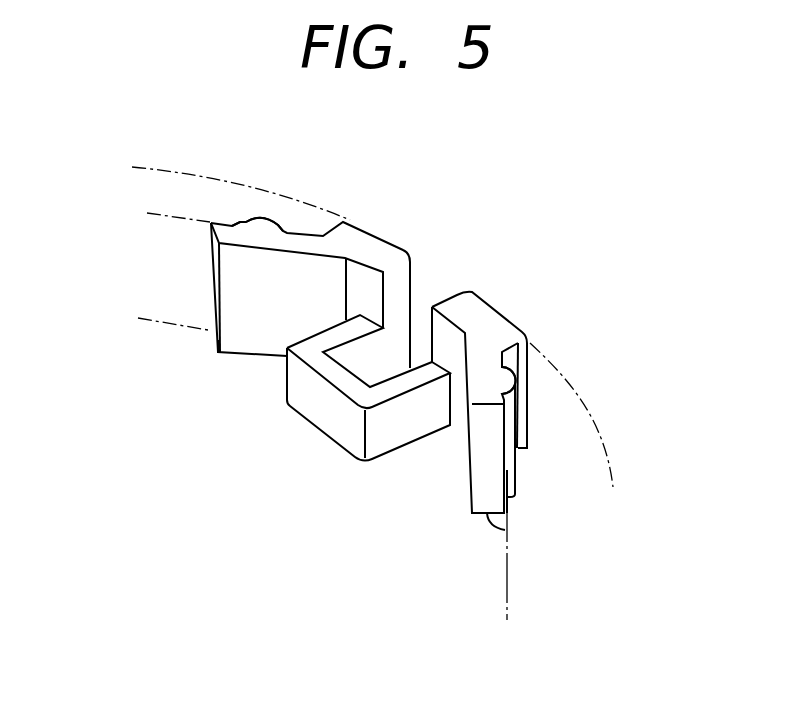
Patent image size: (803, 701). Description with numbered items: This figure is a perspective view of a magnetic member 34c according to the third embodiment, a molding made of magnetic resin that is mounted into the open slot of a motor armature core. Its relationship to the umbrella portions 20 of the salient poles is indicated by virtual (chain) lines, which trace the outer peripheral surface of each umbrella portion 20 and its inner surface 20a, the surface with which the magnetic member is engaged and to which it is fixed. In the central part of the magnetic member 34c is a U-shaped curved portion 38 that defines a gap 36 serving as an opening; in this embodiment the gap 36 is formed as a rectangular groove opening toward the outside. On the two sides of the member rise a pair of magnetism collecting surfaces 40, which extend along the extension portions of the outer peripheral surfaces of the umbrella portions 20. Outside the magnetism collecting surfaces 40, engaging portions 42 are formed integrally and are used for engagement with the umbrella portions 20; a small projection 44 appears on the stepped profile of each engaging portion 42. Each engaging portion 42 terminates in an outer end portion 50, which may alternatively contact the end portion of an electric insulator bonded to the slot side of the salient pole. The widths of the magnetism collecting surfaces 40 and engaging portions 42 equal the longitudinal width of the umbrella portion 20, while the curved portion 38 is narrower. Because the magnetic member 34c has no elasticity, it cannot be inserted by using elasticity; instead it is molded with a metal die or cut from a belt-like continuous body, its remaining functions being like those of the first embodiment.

The umbrella portion 20 is at (150, 167).
The inner surface of the umbrella portion 20a is at (175, 323).
The magnetic member 34c is at (484, 213).
The gap 36 is at (424, 299).
The U-shaped curved portion 38 is at (315, 420).
The magnetism collecting surface 40 is at (393, 242).
The engaging portion 42 is at (239, 222).
The projection 44 is at (282, 222).
The outer end portion of the engaging portion 50 is at (207, 335).